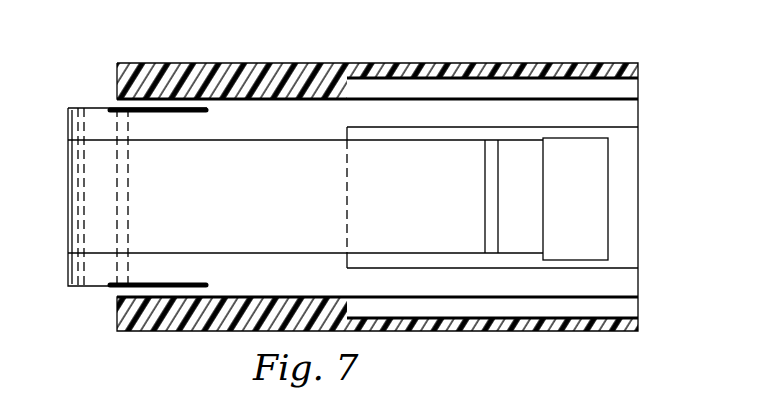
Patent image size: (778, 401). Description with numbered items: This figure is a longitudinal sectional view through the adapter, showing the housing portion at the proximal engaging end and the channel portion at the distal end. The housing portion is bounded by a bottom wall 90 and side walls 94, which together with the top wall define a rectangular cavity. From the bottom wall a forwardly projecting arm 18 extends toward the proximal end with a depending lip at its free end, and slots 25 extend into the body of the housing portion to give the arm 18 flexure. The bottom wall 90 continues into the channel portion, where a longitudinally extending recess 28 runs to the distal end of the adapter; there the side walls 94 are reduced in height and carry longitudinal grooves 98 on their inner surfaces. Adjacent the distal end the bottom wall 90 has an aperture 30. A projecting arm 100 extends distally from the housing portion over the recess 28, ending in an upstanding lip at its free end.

The forwardly projecting arm 18 is at (97, 118).
The slots 25 is at (183, 105).
The bottom wall 90 is at (248, 110).
The side walls 94 is at (558, 67).
The grooves 98 is at (627, 90).
The projecting arm 100 is at (430, 206).
The aperture 30 is at (605, 189).
The longitudinally extending recess 28 is at (618, 260).